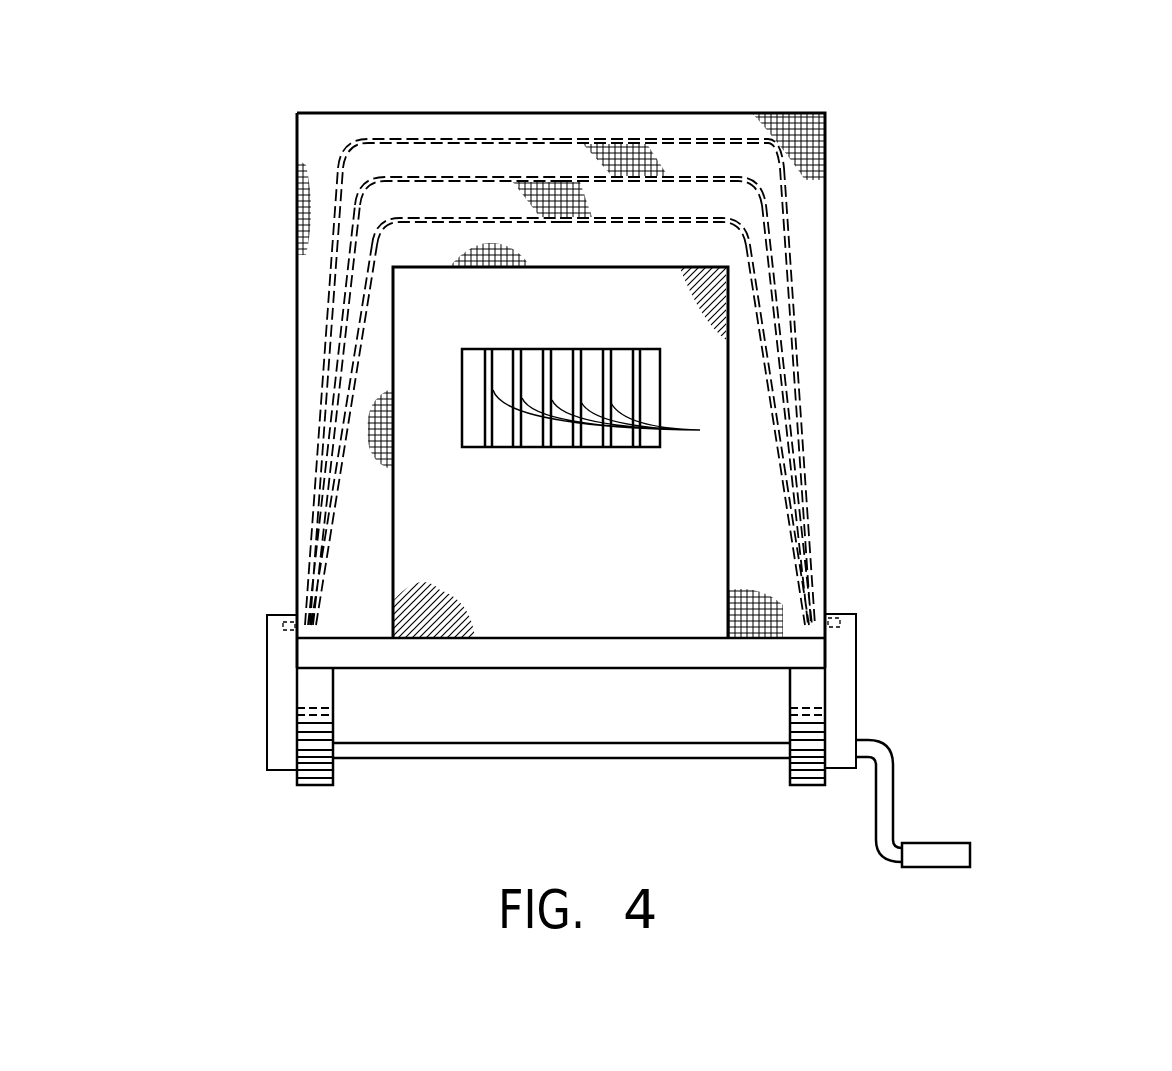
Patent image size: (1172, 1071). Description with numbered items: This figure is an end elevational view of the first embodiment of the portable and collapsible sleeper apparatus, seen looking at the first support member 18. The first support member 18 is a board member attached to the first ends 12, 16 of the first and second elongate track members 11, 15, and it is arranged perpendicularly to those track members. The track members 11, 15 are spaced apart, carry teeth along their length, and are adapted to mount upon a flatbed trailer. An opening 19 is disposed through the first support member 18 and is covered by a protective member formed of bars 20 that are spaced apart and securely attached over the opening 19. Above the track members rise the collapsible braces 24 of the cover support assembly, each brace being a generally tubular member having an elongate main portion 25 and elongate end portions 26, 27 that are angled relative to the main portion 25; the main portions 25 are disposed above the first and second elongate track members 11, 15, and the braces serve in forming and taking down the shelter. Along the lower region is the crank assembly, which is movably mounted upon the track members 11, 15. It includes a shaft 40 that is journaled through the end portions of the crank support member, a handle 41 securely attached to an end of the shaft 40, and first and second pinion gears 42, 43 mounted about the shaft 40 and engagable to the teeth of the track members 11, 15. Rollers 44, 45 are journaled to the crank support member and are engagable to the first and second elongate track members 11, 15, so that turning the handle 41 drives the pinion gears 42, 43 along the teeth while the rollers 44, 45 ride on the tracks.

The first elongate track member 11 is at (813, 682).
The first end of first elongate track member 12 is at (815, 680).
The second elongate track member 15 is at (300, 688).
The first end of second elongate track member 16 is at (327, 685).
The first support member 18 is at (713, 365).
The opening of first support member 19 is at (460, 430).
The bars 20 is at (700, 430).
The collapsible brace 24 is at (647, 216).
The elongate main portion 25 is at (497, 216).
The elongate end portion 26 is at (350, 380).
The elongate end portion 27 is at (793, 340).
The shaft 40 is at (540, 758).
The handle 41 is at (885, 797).
The first pinion gear 42 is at (810, 770).
The second pinion gear 43 is at (317, 763).
The roller 44 is at (838, 613).
The roller 45 is at (295, 622).